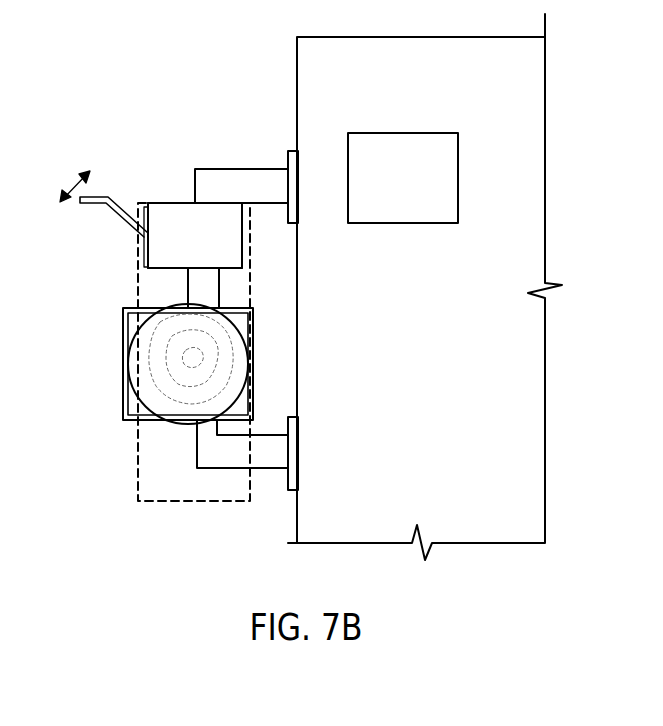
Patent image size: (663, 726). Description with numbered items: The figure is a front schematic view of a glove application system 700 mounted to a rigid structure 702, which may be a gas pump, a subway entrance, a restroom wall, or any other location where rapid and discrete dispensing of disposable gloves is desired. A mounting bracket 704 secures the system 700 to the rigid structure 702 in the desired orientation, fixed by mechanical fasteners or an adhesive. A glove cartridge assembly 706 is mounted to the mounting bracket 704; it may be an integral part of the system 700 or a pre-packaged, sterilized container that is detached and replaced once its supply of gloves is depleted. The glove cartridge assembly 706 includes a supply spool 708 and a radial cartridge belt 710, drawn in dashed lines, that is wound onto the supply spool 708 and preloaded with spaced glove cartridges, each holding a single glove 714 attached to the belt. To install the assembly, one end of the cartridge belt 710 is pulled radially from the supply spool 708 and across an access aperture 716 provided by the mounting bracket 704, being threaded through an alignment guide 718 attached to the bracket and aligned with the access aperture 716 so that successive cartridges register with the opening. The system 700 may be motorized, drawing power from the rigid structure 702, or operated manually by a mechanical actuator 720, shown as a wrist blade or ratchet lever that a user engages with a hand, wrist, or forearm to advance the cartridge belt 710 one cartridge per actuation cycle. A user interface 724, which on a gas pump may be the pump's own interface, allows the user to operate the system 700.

The glove application system 700 is at (78, 133).
The rigid structure 702 is at (402, 103).
The mounting bracket 704 is at (242, 168).
The glove cartridge assembly 706 is at (166, 190).
The supply spool 708 is at (146, 258).
The cartridge belt 710 is at (137, 289).
The glove 714 is at (154, 373).
The access aperture 716 is at (151, 398).
The alignment guide 718 is at (123, 322).
The mechanical actuator 720 is at (108, 212).
The user interface 724 is at (384, 191).